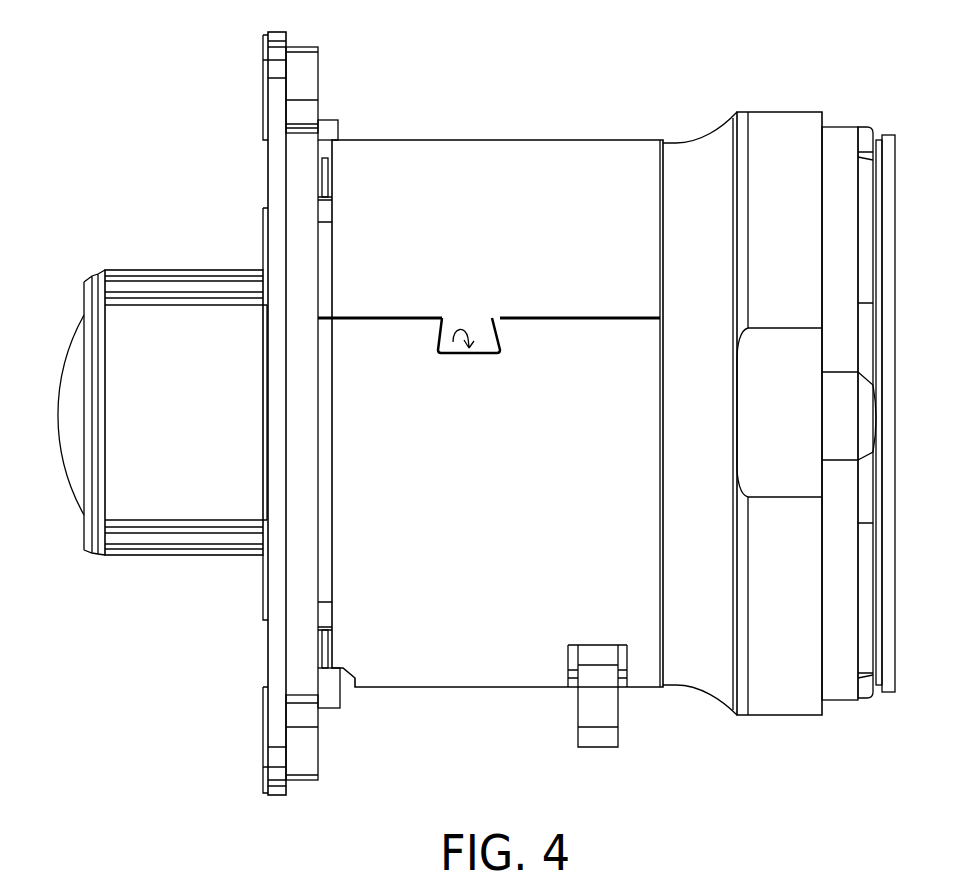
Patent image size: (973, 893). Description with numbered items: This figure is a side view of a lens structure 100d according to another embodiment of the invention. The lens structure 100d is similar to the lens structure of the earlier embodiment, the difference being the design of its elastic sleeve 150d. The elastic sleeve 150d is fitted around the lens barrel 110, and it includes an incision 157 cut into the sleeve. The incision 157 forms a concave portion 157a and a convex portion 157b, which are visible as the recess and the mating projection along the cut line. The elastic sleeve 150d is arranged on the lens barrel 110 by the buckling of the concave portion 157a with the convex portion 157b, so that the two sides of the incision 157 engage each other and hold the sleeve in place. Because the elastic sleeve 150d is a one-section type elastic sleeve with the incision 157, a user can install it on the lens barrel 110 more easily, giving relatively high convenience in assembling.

The lens structure 100d is at (945, 761).
The lens barrel 110 is at (555, 197).
The elastic sleeve 150d is at (443, 198).
The incision 157 is at (537, 745).
The concave portion 157a is at (448, 353).
The convex portion 157b is at (483, 340).